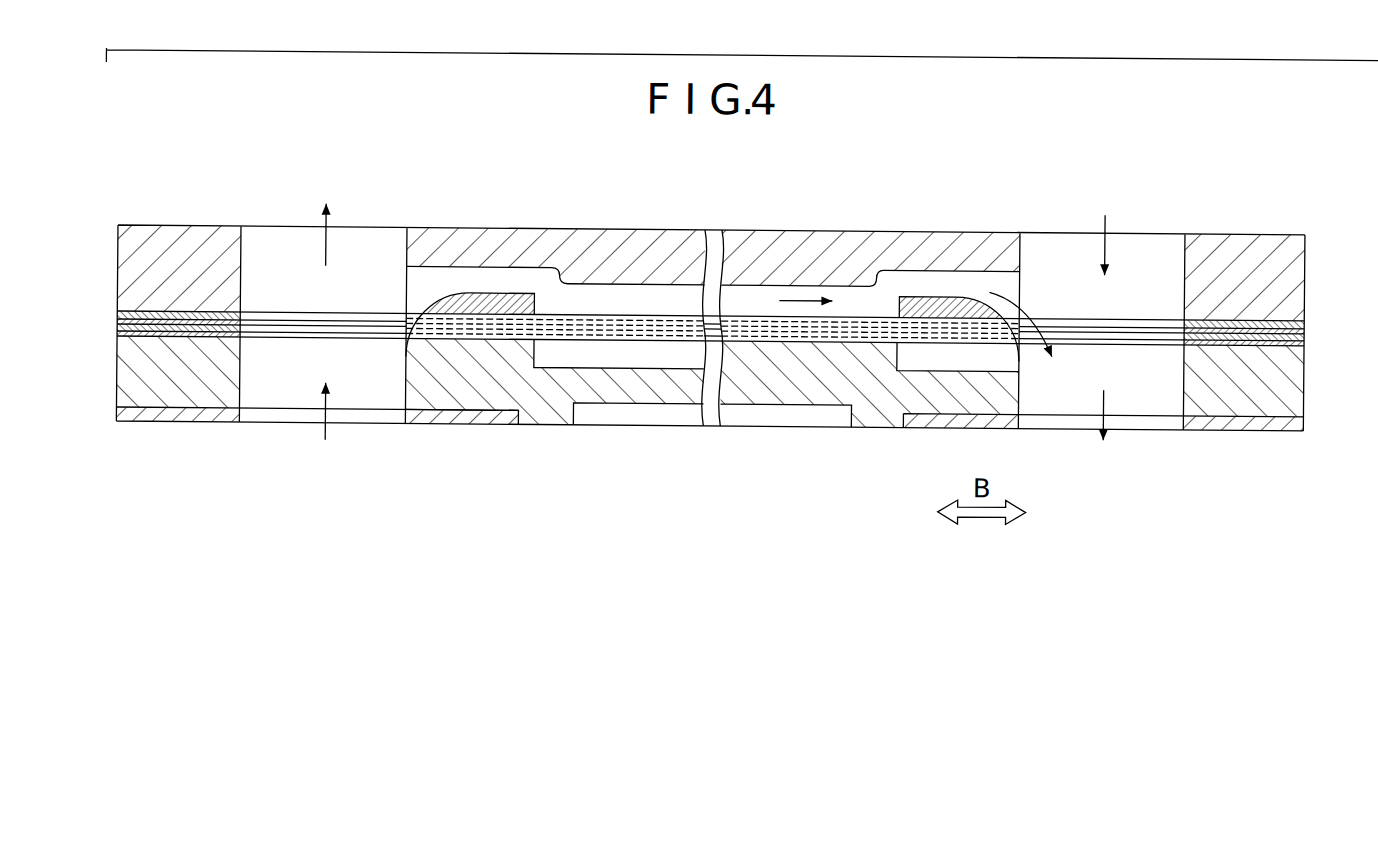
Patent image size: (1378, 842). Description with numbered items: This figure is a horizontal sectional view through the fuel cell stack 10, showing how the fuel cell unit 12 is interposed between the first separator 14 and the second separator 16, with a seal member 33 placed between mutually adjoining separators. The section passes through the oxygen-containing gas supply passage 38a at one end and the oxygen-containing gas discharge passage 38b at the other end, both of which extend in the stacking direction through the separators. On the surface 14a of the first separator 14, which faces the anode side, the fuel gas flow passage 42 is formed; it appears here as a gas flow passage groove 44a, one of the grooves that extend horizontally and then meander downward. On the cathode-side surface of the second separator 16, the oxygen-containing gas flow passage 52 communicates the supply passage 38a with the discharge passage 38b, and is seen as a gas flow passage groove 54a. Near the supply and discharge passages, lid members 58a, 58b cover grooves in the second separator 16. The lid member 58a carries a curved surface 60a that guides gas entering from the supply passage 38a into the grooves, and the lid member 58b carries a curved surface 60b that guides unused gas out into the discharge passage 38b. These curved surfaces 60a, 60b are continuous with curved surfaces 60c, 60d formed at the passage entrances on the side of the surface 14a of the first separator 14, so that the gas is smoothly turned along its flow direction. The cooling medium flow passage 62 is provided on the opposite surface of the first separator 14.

The fuel cell stack 10 is at (1238, 128).
The fuel cell unit 12 is at (1310, 322).
The first separator 14 is at (668, 400).
The surface of the first separator 14a is at (473, 359).
The second separator 16 is at (856, 222).
The seal member 33 is at (1213, 419).
The oxygen-containing gas supply passage 38a is at (366, 241).
The oxygen-containing gas discharge passage 38b is at (1145, 241).
The fuel gas flow passage 42 is at (588, 356).
The gas flow passage groove 44a is at (813, 354).
The oxygen-containing gas flow passage 52 is at (741, 292).
The gas flow passage groove 54a is at (567, 294).
The lid member 58a is at (503, 305).
The lid member 58b is at (930, 295).
The curved surface (guide section) 60a is at (455, 292).
The curved surface (guide section) 60b is at (967, 298).
The curved surface (guide section) 60c is at (442, 280).
The curved surface (guide section) 60d is at (1012, 332).
The cooling medium flow passage 62 is at (773, 405).